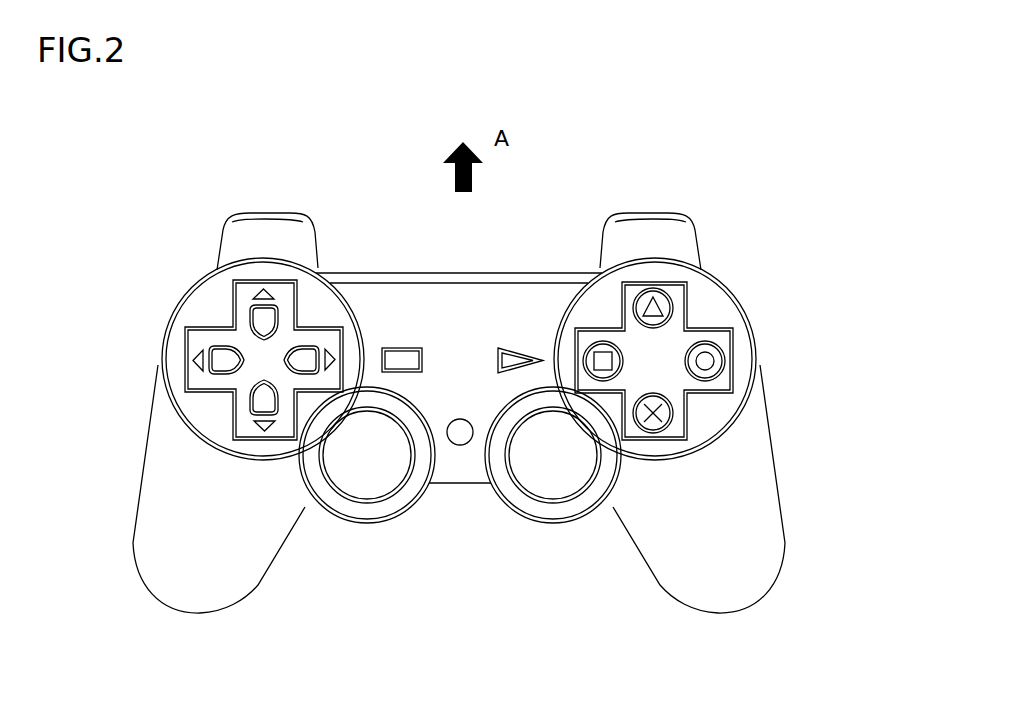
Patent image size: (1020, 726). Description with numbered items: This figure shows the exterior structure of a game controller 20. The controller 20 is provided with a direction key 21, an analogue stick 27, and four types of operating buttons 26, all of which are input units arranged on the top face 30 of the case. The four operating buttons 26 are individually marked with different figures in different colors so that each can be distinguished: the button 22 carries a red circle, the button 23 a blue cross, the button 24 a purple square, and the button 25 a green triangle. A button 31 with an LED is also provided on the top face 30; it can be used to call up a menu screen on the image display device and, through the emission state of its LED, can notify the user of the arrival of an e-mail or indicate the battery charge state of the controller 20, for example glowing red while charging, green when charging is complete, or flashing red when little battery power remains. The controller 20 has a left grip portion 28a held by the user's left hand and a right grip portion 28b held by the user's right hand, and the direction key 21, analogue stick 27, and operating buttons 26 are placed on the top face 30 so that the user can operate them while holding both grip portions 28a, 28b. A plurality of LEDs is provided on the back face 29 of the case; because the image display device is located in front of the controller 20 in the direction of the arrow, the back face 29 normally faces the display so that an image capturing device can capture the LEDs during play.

The controller 20 is at (826, 128).
The direction key 21 is at (205, 338).
The button 22 is at (714, 350).
The button 23 is at (668, 412).
The button 24 is at (617, 362).
The button 25 is at (666, 306).
The operating buttons 26 is at (855, 257).
The analogue stick 27 is at (377, 483).
The left grip portion 28a is at (198, 588).
The right grip portion 28b is at (730, 582).
The back face 29 is at (462, 273).
The top face 30 is at (428, 308).
The button with an LED 31 is at (460, 437).